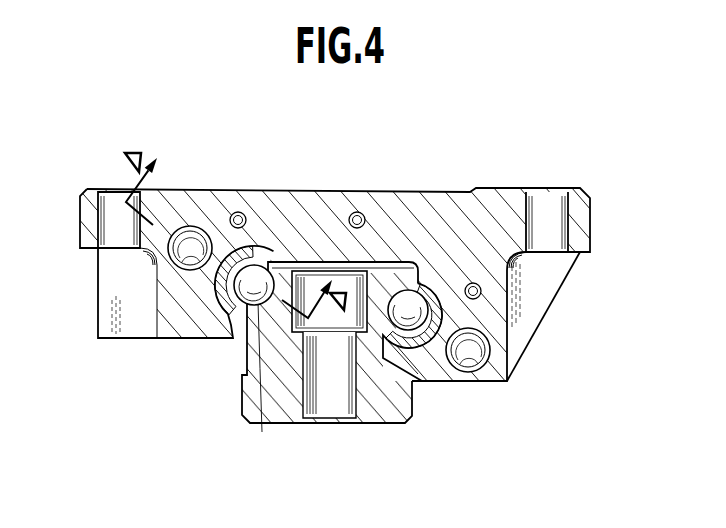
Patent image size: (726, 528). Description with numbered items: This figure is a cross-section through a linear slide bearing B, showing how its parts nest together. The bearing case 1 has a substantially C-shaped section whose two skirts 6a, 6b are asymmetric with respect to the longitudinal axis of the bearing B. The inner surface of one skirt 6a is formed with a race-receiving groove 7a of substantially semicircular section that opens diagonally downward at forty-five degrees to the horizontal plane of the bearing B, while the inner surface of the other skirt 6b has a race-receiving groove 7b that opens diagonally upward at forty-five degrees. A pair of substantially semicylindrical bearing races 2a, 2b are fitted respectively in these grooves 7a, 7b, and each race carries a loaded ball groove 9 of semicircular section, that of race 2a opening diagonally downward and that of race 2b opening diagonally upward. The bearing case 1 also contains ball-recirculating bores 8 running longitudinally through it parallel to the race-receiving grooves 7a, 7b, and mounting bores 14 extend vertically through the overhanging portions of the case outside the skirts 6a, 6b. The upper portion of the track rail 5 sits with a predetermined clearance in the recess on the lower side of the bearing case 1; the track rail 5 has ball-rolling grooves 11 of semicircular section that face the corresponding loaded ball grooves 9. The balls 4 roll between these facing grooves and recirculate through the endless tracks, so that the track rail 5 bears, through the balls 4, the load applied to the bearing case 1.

The linear slide bearing B is at (596, 190).
The bearing case 1 is at (442, 188).
The bearing race 2a is at (254, 236).
The bearing race 2b is at (456, 312).
The balls 4 is at (233, 258).
The track rail 5 is at (242, 374).
The skirt 6a is at (168, 326).
The skirt 6b is at (498, 381).
The race-receiving groove 7a is at (227, 307).
The race-receiving groove 7b is at (417, 343).
The ball-recirculating bores 8 is at (175, 256).
The loaded ball groove 9 is at (262, 268).
The ball-rolling grooves 11 is at (412, 262).
The mounting bores 14 is at (112, 195).